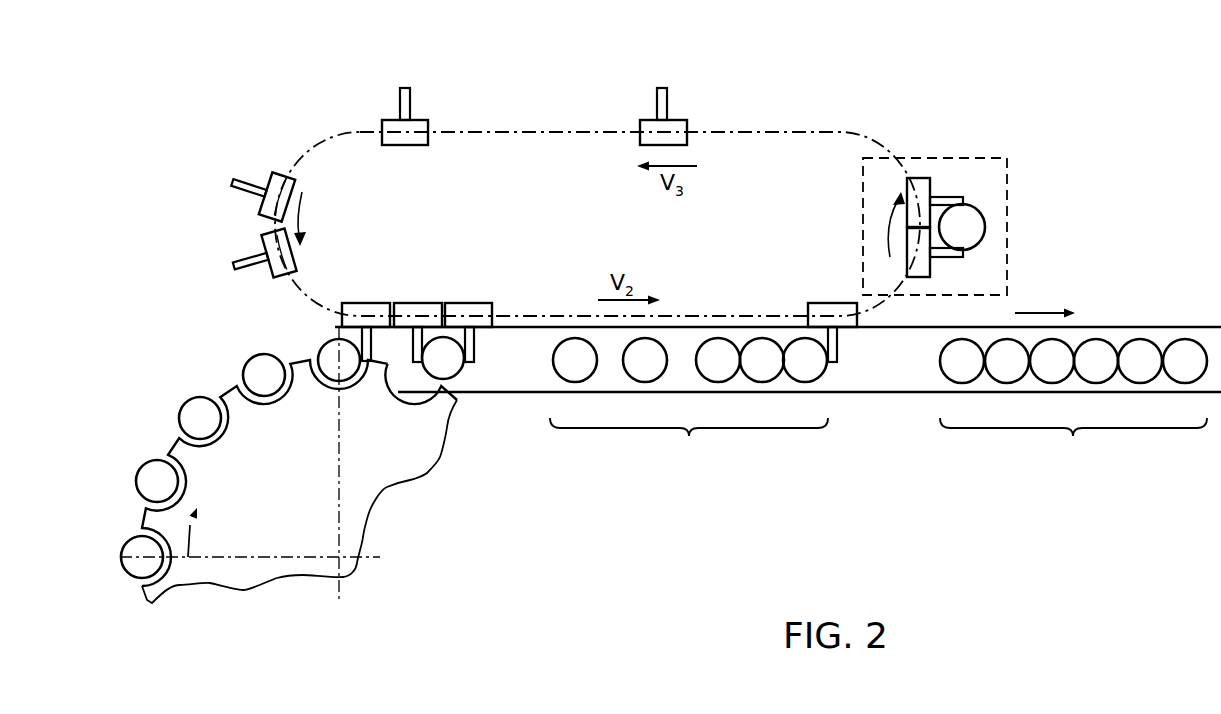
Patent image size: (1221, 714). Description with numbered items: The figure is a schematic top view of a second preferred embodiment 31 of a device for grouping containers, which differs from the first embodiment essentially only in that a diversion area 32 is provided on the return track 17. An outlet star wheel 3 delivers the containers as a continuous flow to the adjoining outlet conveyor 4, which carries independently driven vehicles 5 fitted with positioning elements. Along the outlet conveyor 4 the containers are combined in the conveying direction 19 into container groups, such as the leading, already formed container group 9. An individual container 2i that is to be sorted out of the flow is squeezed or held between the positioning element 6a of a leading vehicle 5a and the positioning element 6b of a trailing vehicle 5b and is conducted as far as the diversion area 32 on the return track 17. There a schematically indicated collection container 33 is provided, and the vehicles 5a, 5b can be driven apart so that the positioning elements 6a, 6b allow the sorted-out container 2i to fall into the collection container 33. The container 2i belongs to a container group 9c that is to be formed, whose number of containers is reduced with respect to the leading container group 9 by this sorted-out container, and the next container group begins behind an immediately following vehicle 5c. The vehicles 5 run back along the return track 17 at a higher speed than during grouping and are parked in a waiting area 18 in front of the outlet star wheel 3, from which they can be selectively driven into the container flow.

The container to be sorted out 2i is at (970, 225).
The outlet star wheel 3 is at (357, 530).
The outlet conveyor 4 is at (521, 120).
The vehicles 5 is at (828, 303).
The leading vehicle 5a is at (472, 303).
The trailing vehicle 5b is at (420, 303).
The immediately following vehicle 5c is at (368, 303).
The positioning element of leading vehicle 6a is at (473, 343).
The positioning element of trailing vehicle 6b is at (398, 404).
The container group 9 is at (1073, 403).
The container group to be formed 9c is at (689, 403).
The return track 17 is at (763, 131).
The waiting area 18 is at (220, 224).
The conveying direction 19 is at (1030, 313).
The second preferred embodiment 31 is at (259, 126).
The diversion area 32 is at (922, 142).
The collection container 33 is at (978, 157).